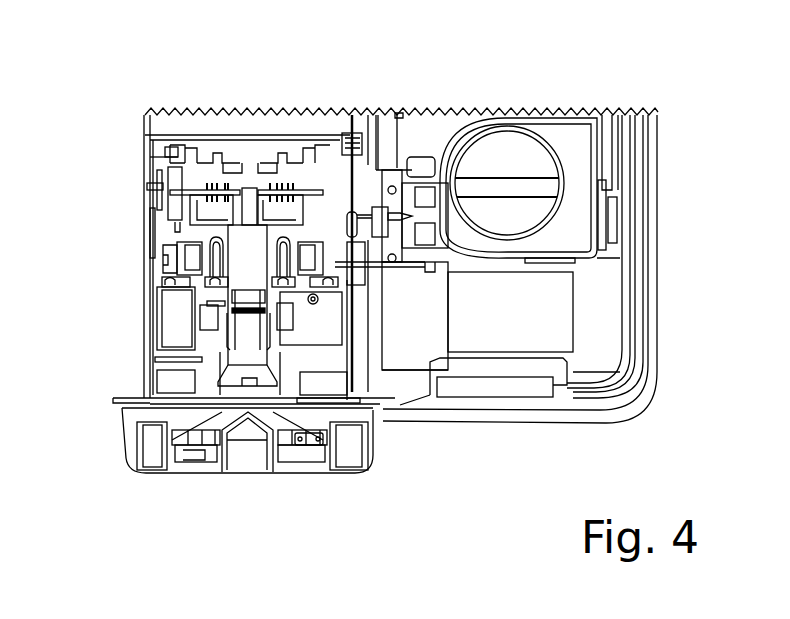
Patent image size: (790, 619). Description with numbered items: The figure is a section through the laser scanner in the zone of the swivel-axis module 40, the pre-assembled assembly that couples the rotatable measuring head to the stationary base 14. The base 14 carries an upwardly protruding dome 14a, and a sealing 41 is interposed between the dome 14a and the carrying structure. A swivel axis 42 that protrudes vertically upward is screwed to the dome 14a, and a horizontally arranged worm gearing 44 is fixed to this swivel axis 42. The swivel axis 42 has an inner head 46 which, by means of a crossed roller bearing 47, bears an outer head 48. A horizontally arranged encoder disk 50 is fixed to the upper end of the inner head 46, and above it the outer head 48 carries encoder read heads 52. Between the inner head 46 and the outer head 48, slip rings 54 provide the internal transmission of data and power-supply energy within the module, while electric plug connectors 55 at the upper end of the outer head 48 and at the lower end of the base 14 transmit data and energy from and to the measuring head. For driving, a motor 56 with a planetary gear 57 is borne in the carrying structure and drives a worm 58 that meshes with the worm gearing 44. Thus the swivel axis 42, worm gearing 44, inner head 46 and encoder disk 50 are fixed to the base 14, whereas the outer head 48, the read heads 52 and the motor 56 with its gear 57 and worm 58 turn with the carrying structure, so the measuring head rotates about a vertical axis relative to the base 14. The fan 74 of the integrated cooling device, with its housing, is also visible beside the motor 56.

The base 14 is at (132, 430).
The dome 14a is at (210, 375).
The swivel-axis module 40 is at (248, 165).
The sealing 41 is at (182, 387).
The swivel axis 42 is at (226, 340).
The worm gearing 44 is at (218, 317).
The inner head 46 is at (225, 247).
The crossed roller bearing 47 is at (304, 255).
The outer head 48 is at (172, 245).
The encoder disk 50 is at (288, 228).
The encoder read heads 52 is at (220, 200).
The slip rings 54 is at (254, 237).
The electric plug connectors 55 is at (193, 153).
The motor 56 is at (503, 318).
The planetary gear 57 is at (420, 342).
The worm 58 is at (315, 332).
The fan 74 is at (550, 142).